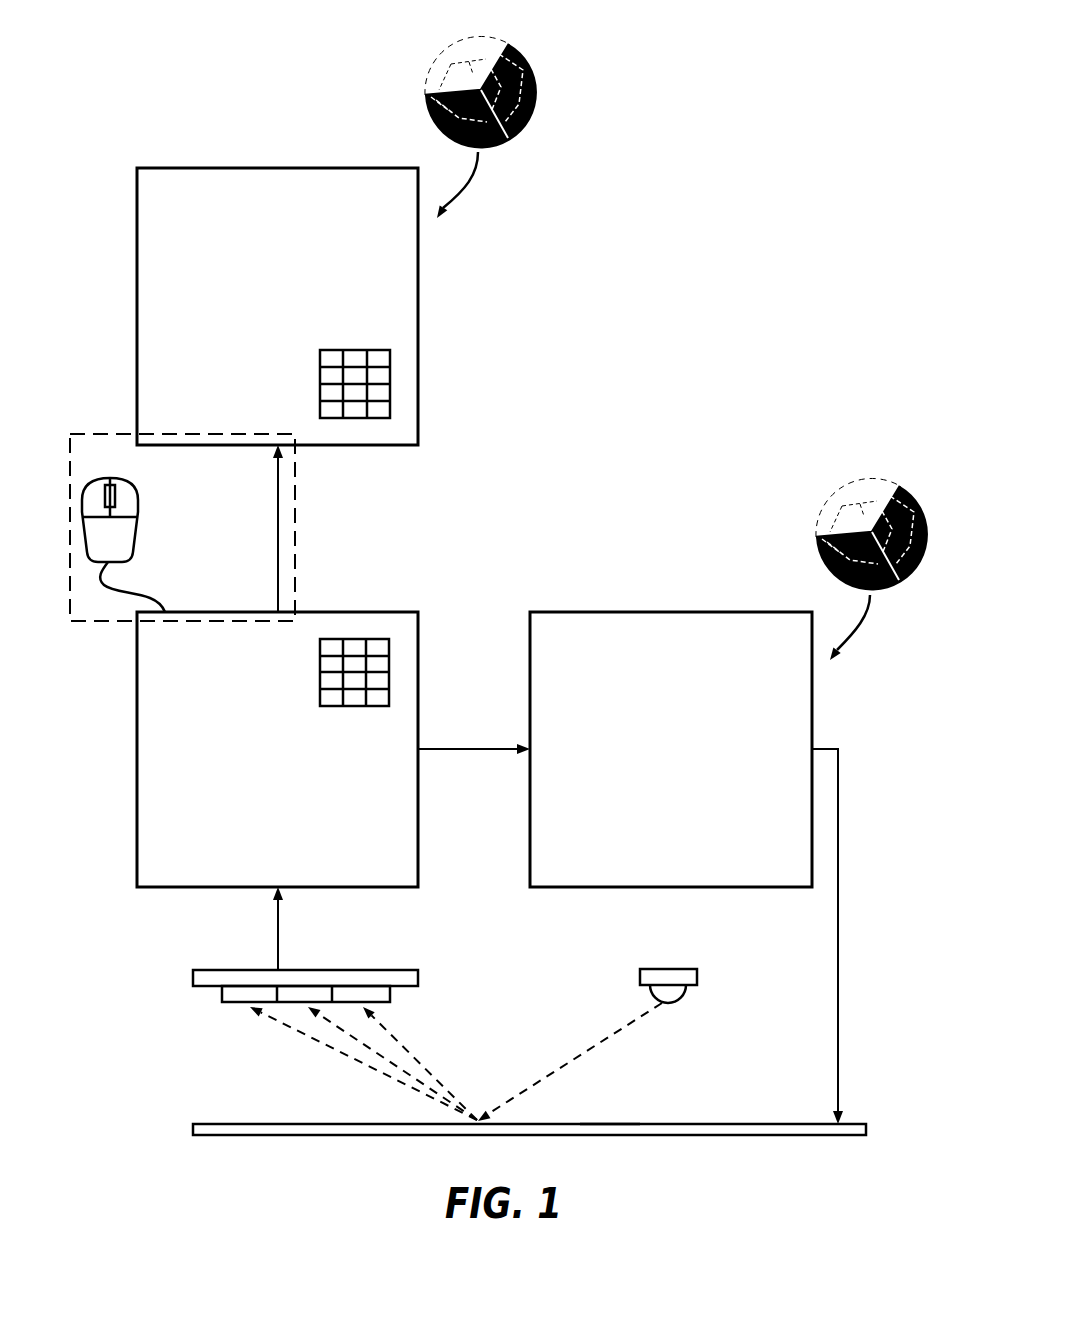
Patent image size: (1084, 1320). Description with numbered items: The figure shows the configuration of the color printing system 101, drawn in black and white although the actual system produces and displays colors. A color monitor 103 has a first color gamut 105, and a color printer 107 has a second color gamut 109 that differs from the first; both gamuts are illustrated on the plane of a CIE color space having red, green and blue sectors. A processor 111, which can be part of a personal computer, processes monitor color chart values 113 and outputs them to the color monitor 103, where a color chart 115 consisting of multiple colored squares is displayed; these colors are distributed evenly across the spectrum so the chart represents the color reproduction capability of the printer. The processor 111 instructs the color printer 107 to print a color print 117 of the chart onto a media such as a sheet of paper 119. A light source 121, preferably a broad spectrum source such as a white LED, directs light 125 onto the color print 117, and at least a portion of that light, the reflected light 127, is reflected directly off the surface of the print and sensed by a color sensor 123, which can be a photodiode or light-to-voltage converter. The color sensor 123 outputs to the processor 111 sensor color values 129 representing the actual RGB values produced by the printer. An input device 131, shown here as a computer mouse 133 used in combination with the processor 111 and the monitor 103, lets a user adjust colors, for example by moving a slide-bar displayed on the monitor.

The color printing system 101 is at (745, 99).
The color monitor 103 is at (278, 168).
The first color gamut 105 is at (510, 51).
The color printer 107 is at (672, 612).
The second color gamut 109 is at (880, 486).
The processor 111 is at (352, 612).
The monitor color chart values 113 is at (386, 664).
The color chart 115 is at (386, 376).
The color print 117 is at (613, 1108).
The sheet of paper 119 is at (240, 1124).
The light source 121 is at (668, 970).
The color sensor 123 is at (345, 970).
The light 125 is at (586, 1052).
The reflected light 127 is at (346, 1057).
The sensor color values 129 is at (277, 933).
The input device 131 is at (105, 434).
The computer mouse 133 is at (138, 514).